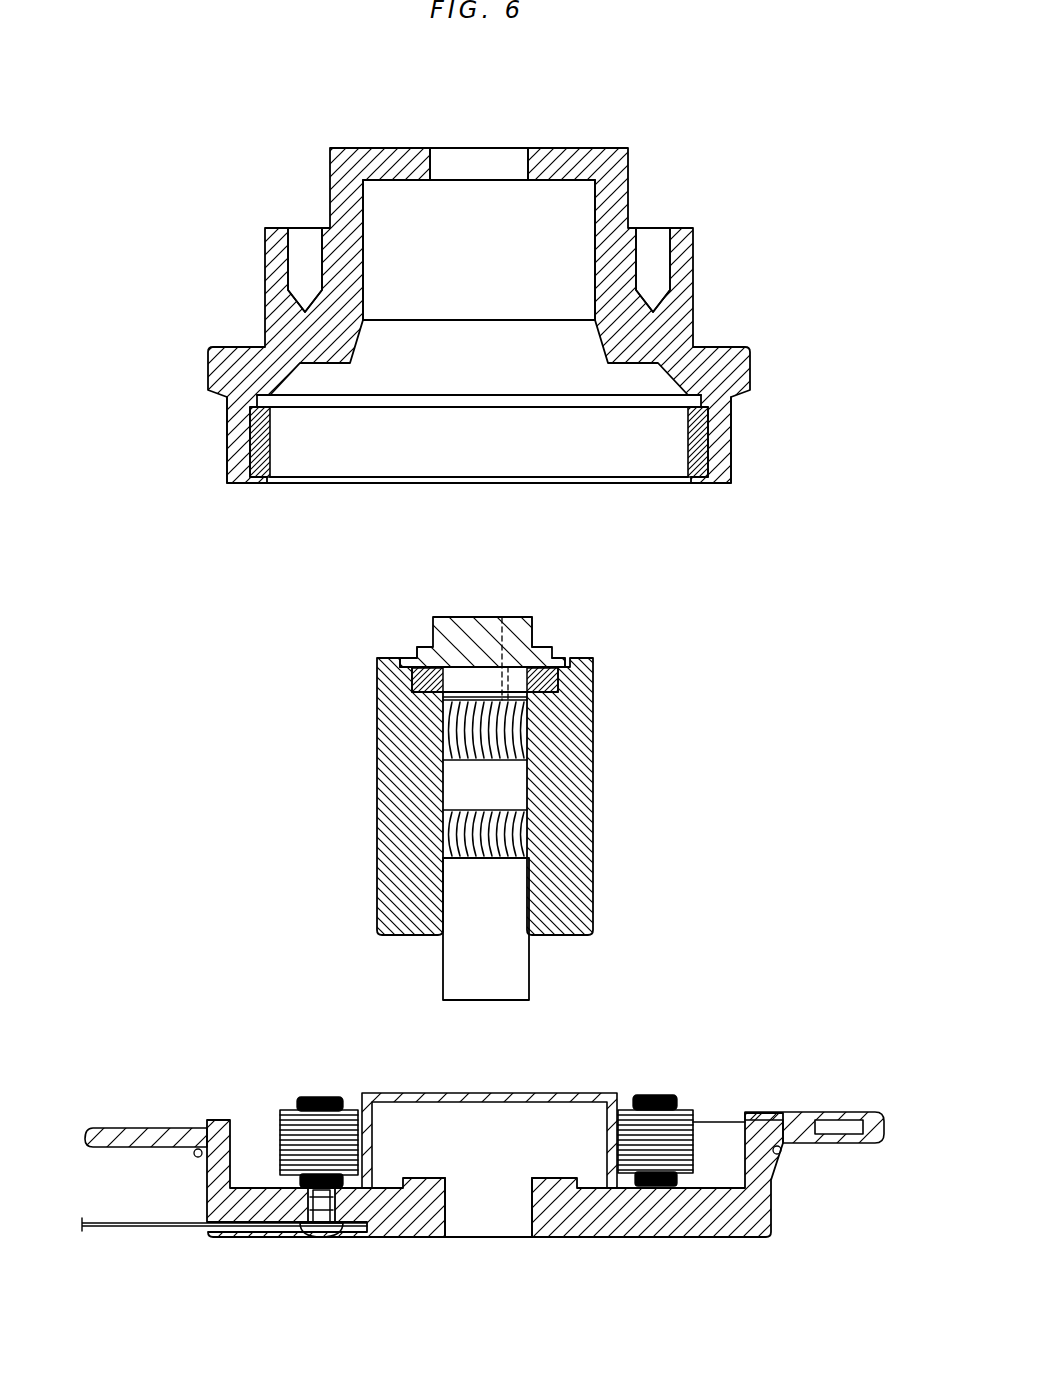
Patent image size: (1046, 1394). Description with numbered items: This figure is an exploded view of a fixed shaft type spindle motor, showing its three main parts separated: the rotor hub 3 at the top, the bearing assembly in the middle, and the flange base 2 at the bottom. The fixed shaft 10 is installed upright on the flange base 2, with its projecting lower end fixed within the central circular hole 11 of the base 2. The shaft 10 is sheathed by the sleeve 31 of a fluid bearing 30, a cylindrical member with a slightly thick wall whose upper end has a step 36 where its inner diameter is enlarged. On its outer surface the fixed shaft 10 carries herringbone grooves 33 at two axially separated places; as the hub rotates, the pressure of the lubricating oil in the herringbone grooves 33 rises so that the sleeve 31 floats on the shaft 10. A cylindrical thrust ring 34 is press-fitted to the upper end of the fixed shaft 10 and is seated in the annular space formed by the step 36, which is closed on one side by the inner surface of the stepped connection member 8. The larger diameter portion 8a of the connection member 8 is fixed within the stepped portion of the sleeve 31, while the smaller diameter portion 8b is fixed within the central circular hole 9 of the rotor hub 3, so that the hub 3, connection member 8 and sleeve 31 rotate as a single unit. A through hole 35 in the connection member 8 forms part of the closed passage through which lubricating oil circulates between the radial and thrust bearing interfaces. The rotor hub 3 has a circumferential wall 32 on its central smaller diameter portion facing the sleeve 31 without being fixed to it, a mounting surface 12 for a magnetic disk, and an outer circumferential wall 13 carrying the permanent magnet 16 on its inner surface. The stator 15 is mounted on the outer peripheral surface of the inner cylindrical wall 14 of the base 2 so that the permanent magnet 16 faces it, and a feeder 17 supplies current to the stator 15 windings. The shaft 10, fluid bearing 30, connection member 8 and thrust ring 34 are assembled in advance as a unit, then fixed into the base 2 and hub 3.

The flange base 2 is at (586, 1258).
The rotor hub 3 is at (368, 130).
The connection member 8 is at (456, 603).
The larger diameter portion 8a is at (557, 662).
The smaller diameter portion 8b is at (513, 623).
The central circular hole 9 is at (444, 150).
The fixed shaft 10 is at (430, 956).
The central circular hole 11 is at (448, 1210).
The mounting surface 12 is at (657, 230).
The outer circumferential wall 13 is at (236, 441).
The inner cylindrical wall 14 is at (369, 1142).
The stator 15 is at (285, 1108).
The permanent magnet 16 is at (272, 433).
The feeder 17 is at (318, 1240).
The fluid bearing 30 is at (602, 797).
The sleeve 31 is at (378, 768).
The circumferential wall 32 is at (355, 229).
The herringbone grooves 33 is at (466, 808).
The thrust ring 34 is at (562, 679).
The through hole 35 is at (500, 618).
The step 36 is at (425, 667).